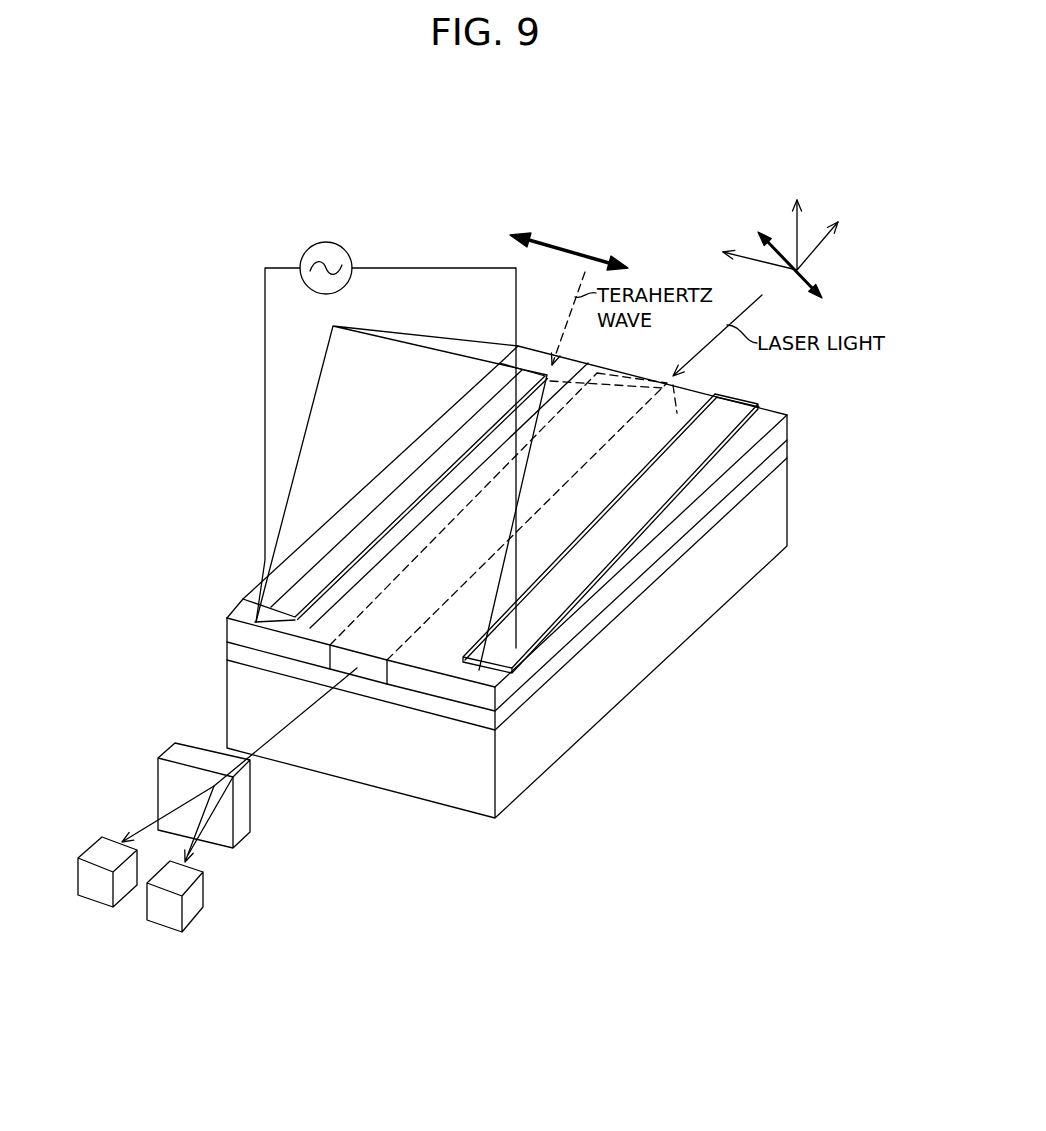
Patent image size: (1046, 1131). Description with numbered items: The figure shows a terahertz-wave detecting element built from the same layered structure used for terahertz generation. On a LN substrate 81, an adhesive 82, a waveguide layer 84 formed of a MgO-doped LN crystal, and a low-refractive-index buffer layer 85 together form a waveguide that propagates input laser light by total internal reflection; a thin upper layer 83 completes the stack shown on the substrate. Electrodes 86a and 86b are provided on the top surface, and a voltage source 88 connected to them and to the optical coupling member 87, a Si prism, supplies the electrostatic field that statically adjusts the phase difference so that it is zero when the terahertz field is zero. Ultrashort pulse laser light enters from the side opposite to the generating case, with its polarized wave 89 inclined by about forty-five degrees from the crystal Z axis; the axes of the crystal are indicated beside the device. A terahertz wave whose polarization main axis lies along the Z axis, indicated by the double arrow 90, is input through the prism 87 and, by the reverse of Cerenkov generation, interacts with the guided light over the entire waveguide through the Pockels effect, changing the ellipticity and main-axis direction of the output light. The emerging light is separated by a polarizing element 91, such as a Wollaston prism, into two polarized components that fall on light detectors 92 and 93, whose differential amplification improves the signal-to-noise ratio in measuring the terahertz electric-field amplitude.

The LN substrate 81 is at (782, 520).
The adhesive 82 is at (790, 450).
The upper clad layer 83 is at (773, 418).
The waveguide layer 84 is at (377, 672).
The low-refractive-index buffer layer 85 is at (305, 650).
The electrode 86a is at (253, 587).
The electrode 86b is at (598, 587).
The optical coupling member 87 is at (378, 362).
The AC power source 88 is at (327, 243).
The polarized wave 89 is at (814, 270).
The polarization direction 90 is at (592, 258).
The polarizing element 91 is at (248, 808).
The light detector 92 is at (205, 886).
The light detector 93 is at (96, 845).